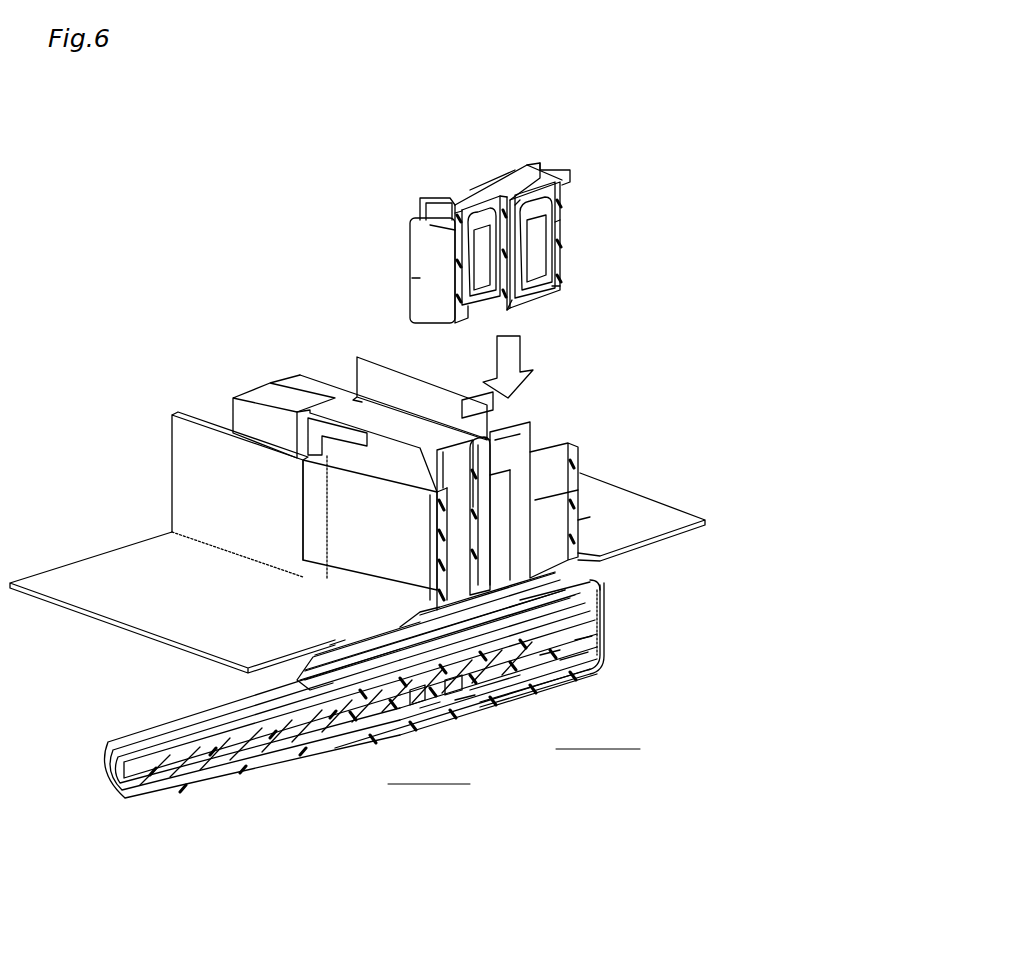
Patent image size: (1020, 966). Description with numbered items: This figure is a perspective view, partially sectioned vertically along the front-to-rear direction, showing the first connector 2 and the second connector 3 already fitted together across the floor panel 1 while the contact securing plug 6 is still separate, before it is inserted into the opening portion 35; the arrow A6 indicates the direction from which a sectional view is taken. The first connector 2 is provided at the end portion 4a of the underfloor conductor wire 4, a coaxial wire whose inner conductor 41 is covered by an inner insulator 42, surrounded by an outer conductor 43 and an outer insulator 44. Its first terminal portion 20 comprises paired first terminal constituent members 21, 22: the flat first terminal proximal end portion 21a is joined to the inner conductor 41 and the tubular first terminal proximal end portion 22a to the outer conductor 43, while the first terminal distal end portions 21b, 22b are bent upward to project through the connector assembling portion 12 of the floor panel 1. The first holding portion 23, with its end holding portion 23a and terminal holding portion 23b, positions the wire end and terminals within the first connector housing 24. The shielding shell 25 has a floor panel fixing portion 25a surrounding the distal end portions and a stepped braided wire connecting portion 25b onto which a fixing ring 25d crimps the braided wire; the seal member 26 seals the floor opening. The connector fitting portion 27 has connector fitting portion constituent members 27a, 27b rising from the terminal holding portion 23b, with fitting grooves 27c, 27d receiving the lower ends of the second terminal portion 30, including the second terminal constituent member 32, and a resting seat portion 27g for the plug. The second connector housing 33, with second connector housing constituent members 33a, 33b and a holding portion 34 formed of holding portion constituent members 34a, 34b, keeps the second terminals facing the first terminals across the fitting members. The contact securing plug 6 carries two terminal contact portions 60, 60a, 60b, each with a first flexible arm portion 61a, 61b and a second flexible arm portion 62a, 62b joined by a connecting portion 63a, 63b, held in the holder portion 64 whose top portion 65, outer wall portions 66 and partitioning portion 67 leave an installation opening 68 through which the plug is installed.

The floor panel 1 is at (43, 563).
The first connector 2 is at (250, 800).
The second connector 3 is at (185, 396).
The underfloor conductor wire 4 is at (162, 800).
The end portion 4a is at (490, 678).
The contact securing plug 6 is at (578, 142).
The connector assembling portion 12 is at (98, 562).
The first terminal portion 20 is at (472, 698).
The first terminal constituent member 21 is at (625, 753).
The first terminal proximal end portion 21a is at (585, 650).
The first terminal distal end portion 21b is at (545, 660).
The first terminal constituent member 22 is at (460, 788).
The first terminal proximal end portion 22a is at (430, 712).
The first terminal distal end portion 22b is at (465, 705).
The first holding portion 23 is at (518, 699).
The end holding portion 23a is at (605, 640).
The terminal holding portion 23b is at (605, 605).
The first connector housing 24 is at (608, 667).
The shielding shell 25 is at (499, 581).
The floor panel fixing portion 25a is at (660, 540).
The braided wire connecting portion 25b is at (385, 630).
The fixing ring 25d is at (340, 645).
The seal member 26 is at (605, 585).
The connector fitting portion 27 is at (481, 471).
The connector fitting portion constituent member 27a is at (582, 448).
The connector fitting portion constituent member 27b is at (345, 385).
The fitting groove 27c is at (568, 492).
The fitting groove 27d is at (432, 522).
The resting seat portion 27g is at (590, 520).
The second terminal portion 30 is at (627, 375).
The second terminal constituent member 32 is at (505, 470).
The second connector housing 33 is at (320, 436).
The second connector housing constituent member 33a is at (402, 352).
The second connector housing constituent member 33b is at (182, 485).
The holding portion 34 is at (433, 486).
The holding portion constituent member 34a is at (583, 432).
The holding portion constituent member 34b is at (332, 540).
The opening portion 35 is at (478, 412).
The inner conductor 41 is at (108, 770).
The inner insulator 42 is at (113, 778).
The outer conductor 43 is at (115, 786).
The outer insulator 44 is at (121, 792).
The terminal contact portion 60 is at (495, 218).
The terminal contact portion 60a is at (643, 143).
The terminal contact portion 60b is at (347, 150).
The first flexible arm portion 61a is at (565, 267).
The first flexible arm portion 61b is at (445, 255).
The second flexible arm portion 62a is at (565, 242).
The second flexible arm portion 62b is at (445, 237).
The connecting portion 63a is at (562, 220).
The connecting portion 63b is at (452, 213).
The holder portion 64 is at (495, 214).
The top portion 65 is at (505, 188).
The outer wall portion 66 is at (432, 278).
The partitioning portion 67 is at (522, 198).
The installation opening 68 is at (533, 299).
The arrow A6 is at (696, 690).